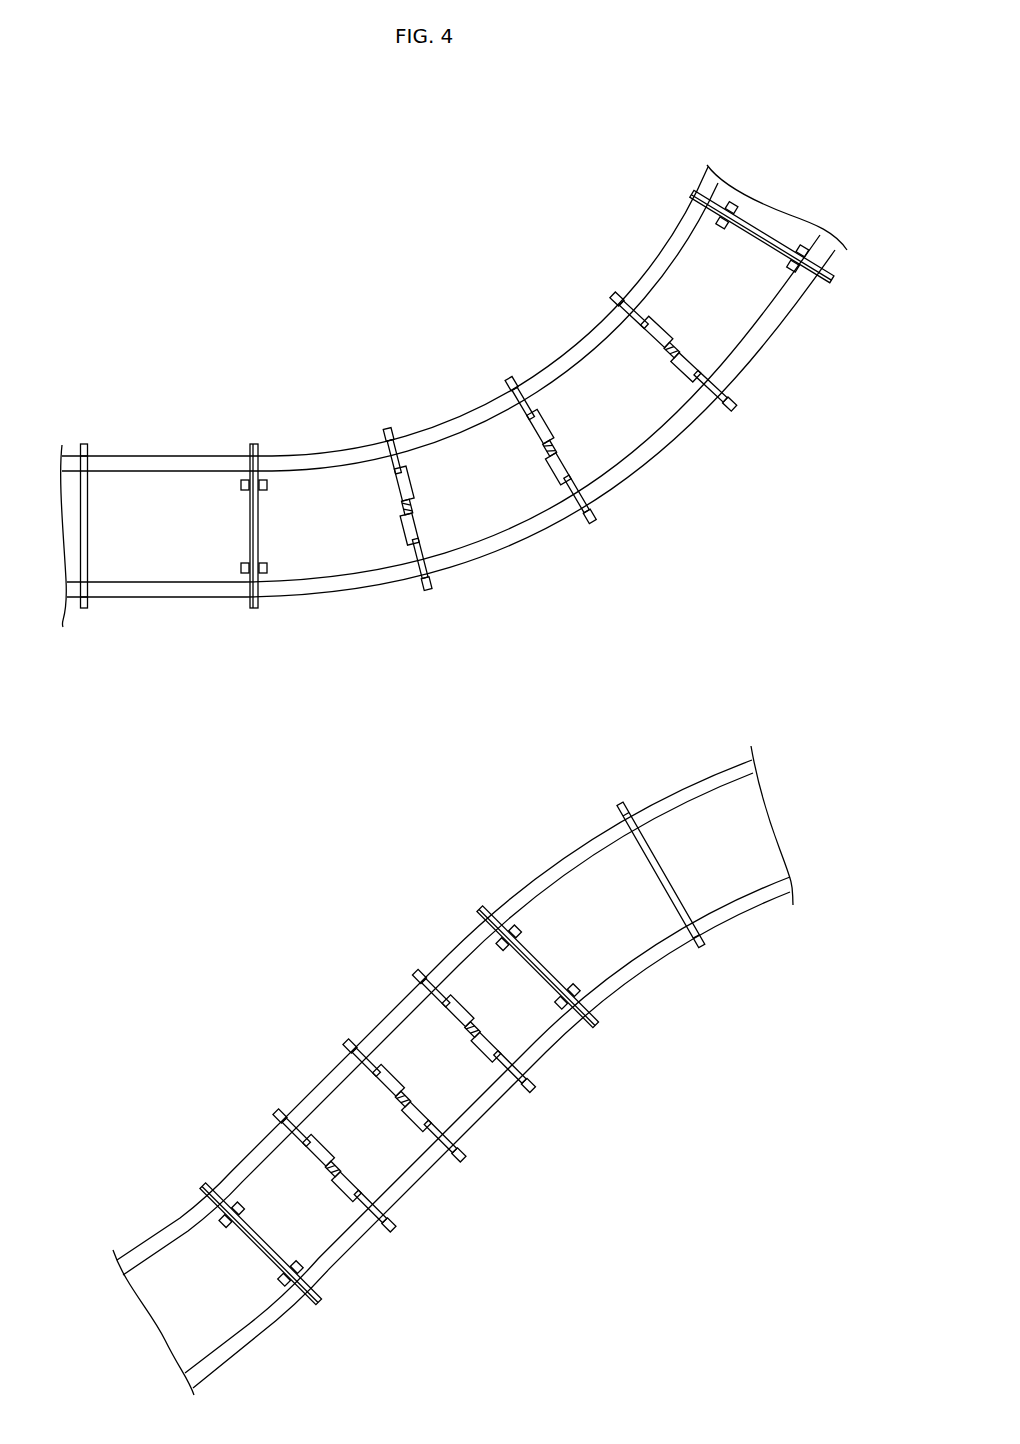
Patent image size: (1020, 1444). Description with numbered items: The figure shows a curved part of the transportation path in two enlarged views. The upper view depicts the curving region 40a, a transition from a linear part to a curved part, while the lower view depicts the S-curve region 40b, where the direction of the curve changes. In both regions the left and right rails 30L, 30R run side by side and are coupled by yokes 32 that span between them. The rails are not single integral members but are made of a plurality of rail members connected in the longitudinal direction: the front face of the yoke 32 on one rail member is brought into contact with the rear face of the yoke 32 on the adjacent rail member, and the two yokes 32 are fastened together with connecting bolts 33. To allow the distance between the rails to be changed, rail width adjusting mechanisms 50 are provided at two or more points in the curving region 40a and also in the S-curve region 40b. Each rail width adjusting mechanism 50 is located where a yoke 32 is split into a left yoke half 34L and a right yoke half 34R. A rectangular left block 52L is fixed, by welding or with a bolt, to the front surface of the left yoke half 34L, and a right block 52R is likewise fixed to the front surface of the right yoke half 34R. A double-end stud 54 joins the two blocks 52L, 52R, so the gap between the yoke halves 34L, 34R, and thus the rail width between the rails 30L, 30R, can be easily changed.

The curving region 40a is at (392, 290).
The S-curve region 40b is at (370, 910).
The left rail 30L is at (143, 455).
The right rail 30R is at (210, 598).
The yoke 32 is at (246, 528).
The connecting bolt 33 is at (268, 568).
The left yoke half 34L is at (393, 467).
The right yoke half 34R is at (427, 546).
The rail width adjusting mechanism 50 is at (538, 796).
The left block 52L is at (414, 478).
The right block 52R is at (427, 526).
The double-end stud 54 is at (412, 502).